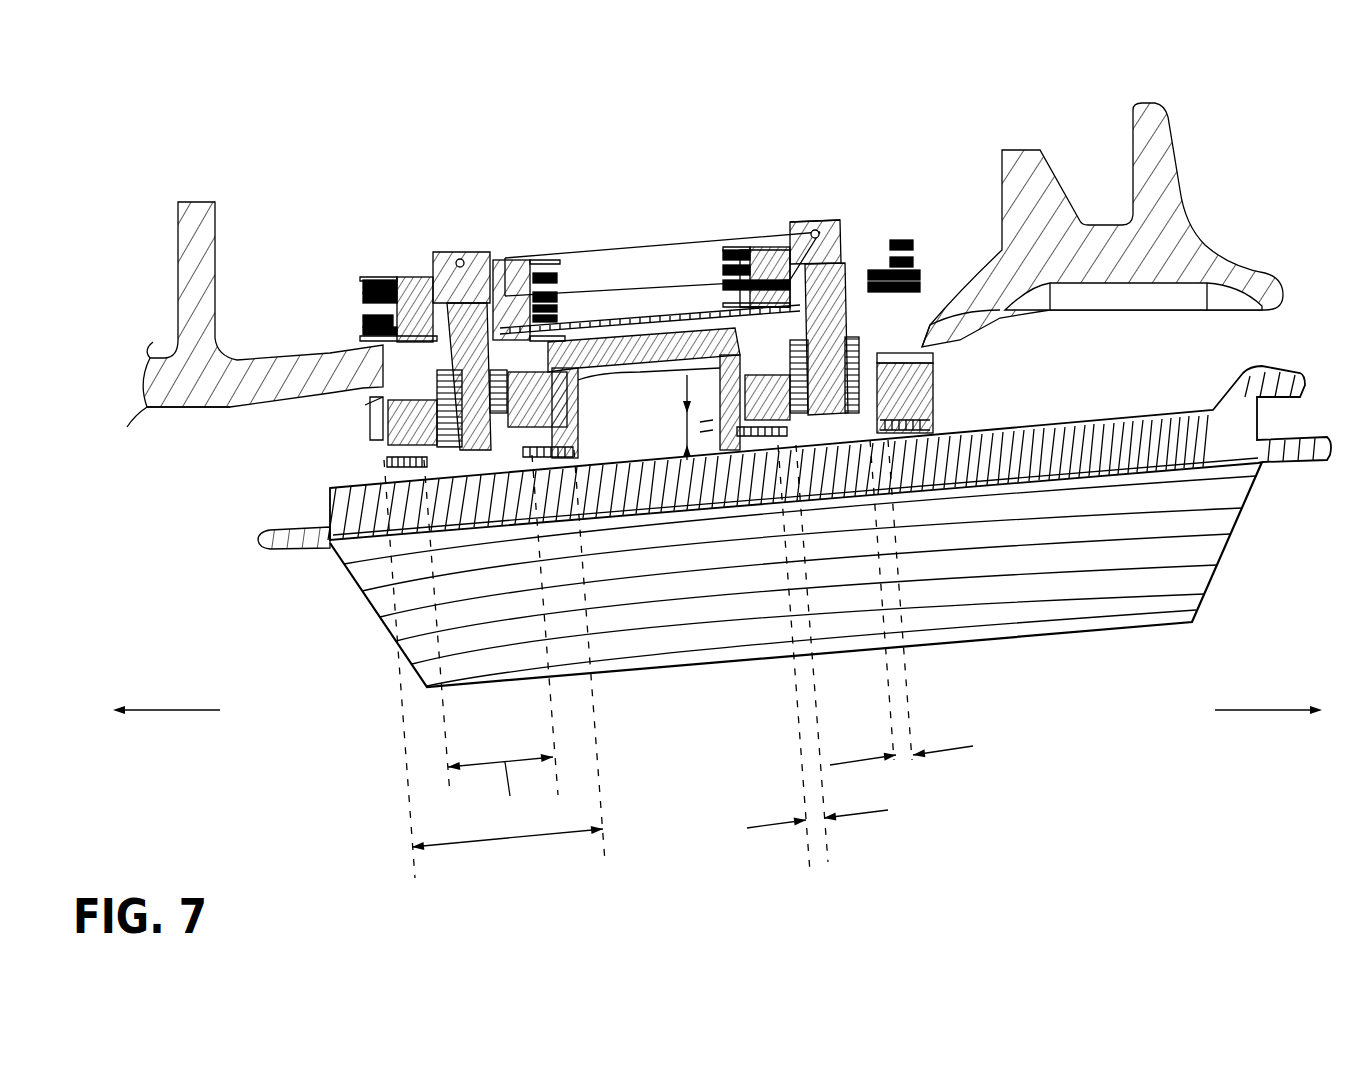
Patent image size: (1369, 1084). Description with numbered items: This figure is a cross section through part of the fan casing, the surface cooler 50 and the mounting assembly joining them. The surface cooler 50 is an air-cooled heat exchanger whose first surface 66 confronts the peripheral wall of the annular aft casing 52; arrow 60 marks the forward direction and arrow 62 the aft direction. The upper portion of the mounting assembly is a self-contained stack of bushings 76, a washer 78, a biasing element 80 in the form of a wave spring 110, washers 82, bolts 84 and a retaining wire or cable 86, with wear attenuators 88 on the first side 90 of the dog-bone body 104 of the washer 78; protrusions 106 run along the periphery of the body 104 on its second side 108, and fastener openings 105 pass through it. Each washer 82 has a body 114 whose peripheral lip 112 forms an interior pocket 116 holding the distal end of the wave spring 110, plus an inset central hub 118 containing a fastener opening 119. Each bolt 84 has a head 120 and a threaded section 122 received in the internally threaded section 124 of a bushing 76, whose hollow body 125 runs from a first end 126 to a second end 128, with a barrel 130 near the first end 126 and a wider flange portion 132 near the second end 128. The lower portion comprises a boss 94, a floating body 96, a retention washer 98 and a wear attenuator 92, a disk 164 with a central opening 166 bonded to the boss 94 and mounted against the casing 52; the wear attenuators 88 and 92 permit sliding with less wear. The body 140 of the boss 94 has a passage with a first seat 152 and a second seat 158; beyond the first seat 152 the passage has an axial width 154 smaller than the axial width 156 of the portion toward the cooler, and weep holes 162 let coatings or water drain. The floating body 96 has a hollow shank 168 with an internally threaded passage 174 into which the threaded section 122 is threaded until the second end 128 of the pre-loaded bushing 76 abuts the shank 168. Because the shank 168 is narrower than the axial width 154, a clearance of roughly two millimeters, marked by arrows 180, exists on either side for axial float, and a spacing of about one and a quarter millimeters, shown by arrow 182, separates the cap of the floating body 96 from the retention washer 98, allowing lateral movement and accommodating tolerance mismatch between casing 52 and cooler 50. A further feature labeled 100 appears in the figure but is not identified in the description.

The surface cooler 50 is at (785, 655).
The annular aft casing 52 is at (292, 368).
The forward direction arrow 60 is at (170, 710).
The aft direction arrow 62 is at (1265, 710).
The first surface 66 is at (640, 470).
The bushing 76 is at (360, 413).
The washer 78 is at (660, 300).
The biasing element 80 is at (350, 308).
The washer 82 is at (383, 345).
The bolt 84 is at (817, 218).
The wire or cable 86 is at (556, 270).
The wear attenuator 88 is at (955, 300).
The first side 90 is at (690, 285).
The wear attenuator 92 is at (935, 330).
The boss 94 is at (935, 372).
The floating body 96 is at (905, 400).
The retention washer 98 is at (895, 400).
The housing lobe 100 is at (930, 347).
The body 104 is at (990, 290).
The fastener openings 105 is at (440, 310).
The set of protrusions 106 is at (640, 275).
The second side 108 is at (765, 250).
The wave spring 110 is at (360, 308).
The peripheral lip 112 is at (575, 280).
The body 114 is at (545, 290).
The interior pocket 116 is at (600, 300).
The central hub 118 is at (510, 290).
The fastener opening 119 is at (447, 370).
The head 120 is at (835, 270).
The threaded section 122 is at (513, 353).
The internally threaded section 124 is at (790, 238).
The hollow body 125 is at (975, 306).
The first end 126 is at (900, 285).
The second end 128 is at (900, 430).
The barrel 130 is at (935, 280).
The flange portion 132 is at (1000, 310).
The body 140 is at (367, 423).
The first seat 152 is at (560, 470).
The axial width 154 is at (500, 788).
The axial width 156 is at (515, 839).
The second seat 158 is at (930, 400).
The weep holes 162 is at (370, 460).
The disk 164 is at (555, 395).
The central opening 166 is at (497, 285).
The shank 168 is at (378, 290).
The internally threaded passage 174 is at (490, 380).
The arrows 180 is at (826, 822).
The arrow 182 is at (687, 433).